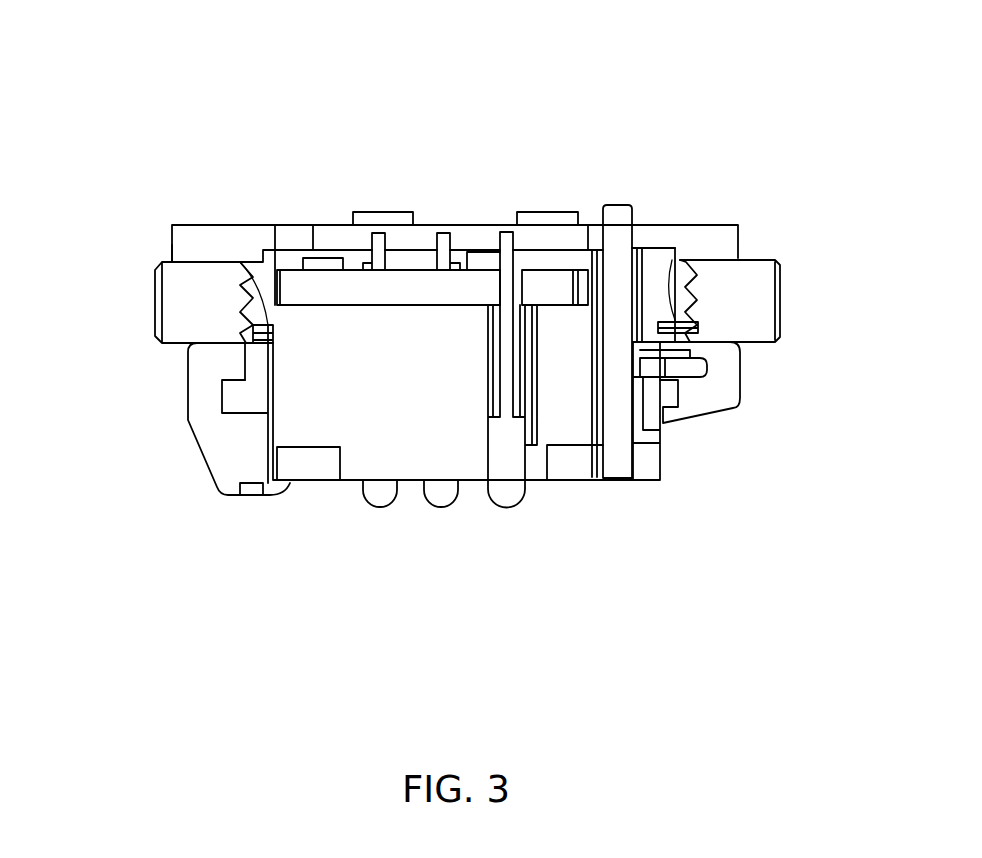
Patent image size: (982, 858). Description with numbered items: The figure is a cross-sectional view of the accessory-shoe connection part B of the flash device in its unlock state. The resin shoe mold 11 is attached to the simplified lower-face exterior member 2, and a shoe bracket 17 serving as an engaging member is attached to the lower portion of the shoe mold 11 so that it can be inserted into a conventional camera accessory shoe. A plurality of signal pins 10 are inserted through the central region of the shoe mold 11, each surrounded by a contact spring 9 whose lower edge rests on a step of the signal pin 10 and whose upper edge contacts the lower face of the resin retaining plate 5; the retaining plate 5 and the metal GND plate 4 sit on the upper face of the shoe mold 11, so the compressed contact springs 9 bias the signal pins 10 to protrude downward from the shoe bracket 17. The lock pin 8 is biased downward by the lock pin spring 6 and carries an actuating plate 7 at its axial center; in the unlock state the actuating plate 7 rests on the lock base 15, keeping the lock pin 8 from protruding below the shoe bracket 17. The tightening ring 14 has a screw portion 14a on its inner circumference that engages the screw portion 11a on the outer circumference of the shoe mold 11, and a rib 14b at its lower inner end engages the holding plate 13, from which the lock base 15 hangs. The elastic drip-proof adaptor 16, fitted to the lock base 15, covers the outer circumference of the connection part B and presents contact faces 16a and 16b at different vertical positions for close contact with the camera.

The accessory-shoe connection part B is at (138, 78).
The lower-face exterior member 2 is at (240, 233).
The GND plate 4 is at (275, 229).
The retaining plate 5 is at (353, 293).
The lock pin spring 6 is at (637, 267).
The actuating plate 7 is at (650, 350).
The lock pin 8 is at (618, 460).
The contact spring 9 is at (488, 327).
The signal pin 10 is at (377, 503).
The shoe mold 11 is at (323, 373).
The screw portion 11a is at (175, 255).
The holding plate 13 is at (240, 262).
The tightening ring 14 is at (755, 268).
The screw portion 14a is at (195, 308).
The rib 14b is at (690, 322).
The lock base 15 is at (243, 392).
The drip-proof adaptor 16 is at (207, 427).
The contact face 16a is at (700, 407).
The contact face 16b is at (247, 490).
The shoe bracket 17 is at (310, 473).